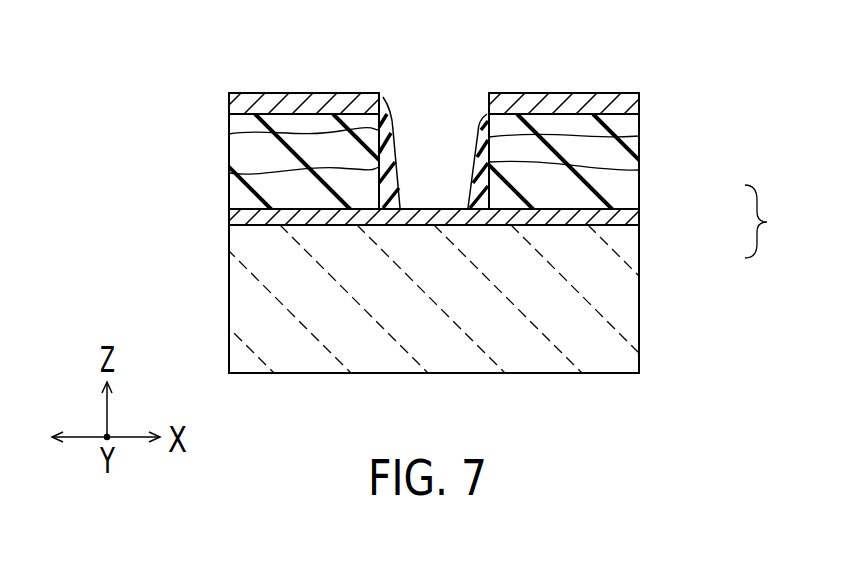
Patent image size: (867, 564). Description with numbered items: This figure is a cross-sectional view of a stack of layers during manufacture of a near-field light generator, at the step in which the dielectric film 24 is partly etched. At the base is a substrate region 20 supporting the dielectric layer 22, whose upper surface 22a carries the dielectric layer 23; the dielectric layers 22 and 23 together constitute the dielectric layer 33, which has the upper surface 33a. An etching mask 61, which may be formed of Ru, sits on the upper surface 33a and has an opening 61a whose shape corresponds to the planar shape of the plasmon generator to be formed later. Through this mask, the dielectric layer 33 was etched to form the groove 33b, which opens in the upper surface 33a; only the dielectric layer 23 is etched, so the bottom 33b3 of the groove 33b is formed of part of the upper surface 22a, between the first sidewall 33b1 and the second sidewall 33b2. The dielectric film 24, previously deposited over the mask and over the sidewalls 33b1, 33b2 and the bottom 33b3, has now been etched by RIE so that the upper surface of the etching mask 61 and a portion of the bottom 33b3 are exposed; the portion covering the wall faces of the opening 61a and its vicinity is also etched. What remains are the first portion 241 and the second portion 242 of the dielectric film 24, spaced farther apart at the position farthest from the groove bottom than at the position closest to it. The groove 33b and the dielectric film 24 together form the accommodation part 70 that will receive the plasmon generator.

The substrate 20 is at (639, 284).
The dielectric layer 22 is at (639, 217).
The upper surface of the dielectric layer 22a is at (253, 209).
The dielectric layer 23 is at (639, 190).
The dielectric film 24 is at (443, 125).
The first portion of the dielectric film 241 is at (229, 134).
The second portion of the dielectric film 242 is at (639, 136).
The dielectric layer 33 is at (774, 221).
The upper surface of the dielectric layer 33a is at (578, 113).
The groove 33b is at (473, 117).
The first sidewall of the groove 33b1 is at (229, 173).
The second sidewall of the groove 33b2 is at (639, 170).
The bottom of the groove 33b3 is at (443, 208).
The etching mask 61 is at (640, 104).
The opening 61a is at (383, 97).
The accommodation part 70 is at (419, 157).